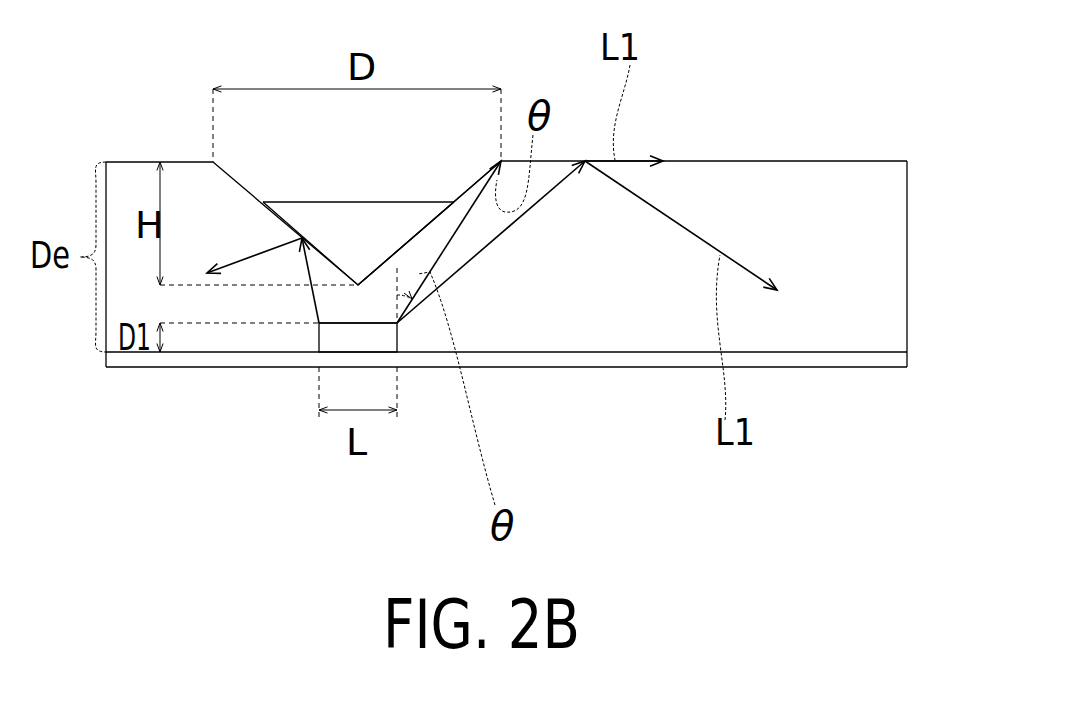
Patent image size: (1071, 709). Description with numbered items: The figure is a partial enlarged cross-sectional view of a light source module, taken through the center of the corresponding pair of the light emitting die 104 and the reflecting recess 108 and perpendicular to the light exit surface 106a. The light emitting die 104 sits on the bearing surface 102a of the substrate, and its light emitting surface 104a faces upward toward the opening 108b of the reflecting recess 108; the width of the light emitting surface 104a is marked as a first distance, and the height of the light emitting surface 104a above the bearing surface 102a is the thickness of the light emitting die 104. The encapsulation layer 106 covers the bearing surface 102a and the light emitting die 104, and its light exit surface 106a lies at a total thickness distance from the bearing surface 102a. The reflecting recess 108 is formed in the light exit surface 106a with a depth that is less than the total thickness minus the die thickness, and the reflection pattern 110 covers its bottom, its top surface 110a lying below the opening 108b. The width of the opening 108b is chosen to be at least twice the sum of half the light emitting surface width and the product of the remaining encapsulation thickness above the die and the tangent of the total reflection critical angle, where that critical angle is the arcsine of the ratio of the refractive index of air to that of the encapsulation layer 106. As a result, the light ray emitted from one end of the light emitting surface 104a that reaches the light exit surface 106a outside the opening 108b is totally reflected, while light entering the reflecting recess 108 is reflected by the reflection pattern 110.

The bearing surface 102a is at (838, 347).
The light emitting die 104 is at (333, 338).
The light emitting surface 104a is at (378, 326).
The encapsulation layer 106 is at (850, 180).
The light exit surface 106a is at (740, 160).
The reflecting recess 108 is at (250, 168).
The opening 108b is at (500, 162).
The reflection pattern 110 is at (376, 216).
The top surface 110a is at (305, 201).